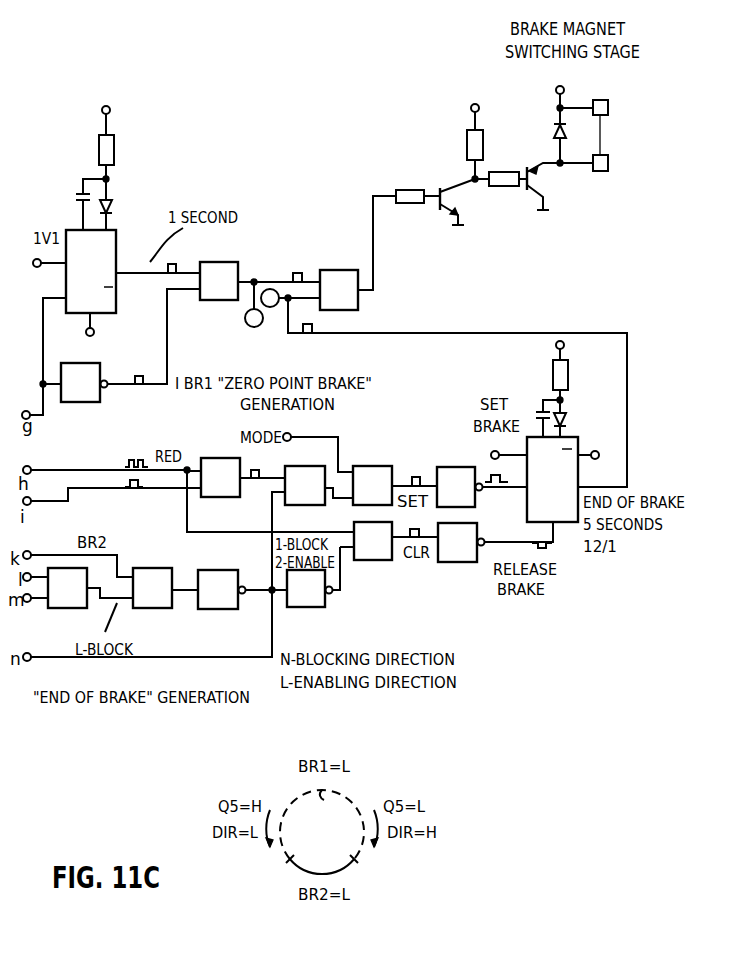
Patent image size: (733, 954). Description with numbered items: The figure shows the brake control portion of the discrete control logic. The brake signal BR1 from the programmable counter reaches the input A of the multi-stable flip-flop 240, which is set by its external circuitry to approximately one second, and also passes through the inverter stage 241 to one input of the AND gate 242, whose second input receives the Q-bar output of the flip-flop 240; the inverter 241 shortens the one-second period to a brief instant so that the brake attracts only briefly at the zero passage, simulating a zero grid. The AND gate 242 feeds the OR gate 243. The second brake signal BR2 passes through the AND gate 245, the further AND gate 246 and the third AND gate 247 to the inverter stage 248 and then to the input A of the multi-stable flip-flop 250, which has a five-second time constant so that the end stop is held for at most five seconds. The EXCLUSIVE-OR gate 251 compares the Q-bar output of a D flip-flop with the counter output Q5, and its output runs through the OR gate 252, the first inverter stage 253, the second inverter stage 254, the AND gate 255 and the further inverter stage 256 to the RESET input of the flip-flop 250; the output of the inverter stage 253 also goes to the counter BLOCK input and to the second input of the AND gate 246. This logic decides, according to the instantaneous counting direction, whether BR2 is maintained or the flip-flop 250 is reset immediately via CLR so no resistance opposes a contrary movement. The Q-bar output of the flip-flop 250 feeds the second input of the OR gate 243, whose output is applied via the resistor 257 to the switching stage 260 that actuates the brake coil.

The multi-stable flip-flop 240 is at (103, 247).
The inverter stage 241 is at (80, 402).
The AND gate 242 is at (213, 300).
The OR gate 243 is at (355, 272).
The AND gate 245 is at (225, 497).
The AND gate 246 is at (300, 505).
The AND gate 247 is at (390, 468).
The inverter stage 248 is at (443, 470).
The multi-stable flip-flop 250 is at (531, 510).
The EXCLUSIVE-OR gate 251 is at (55, 608).
The OR gate 252 is at (145, 608).
The first inverter stage 253 is at (215, 609).
The second inverter stage 254 is at (320, 607).
The AND gate 255 is at (375, 560).
The inverter stage 256 is at (458, 562).
The resistor 257 is at (410, 200).
The switching stage 260 is at (598, 232).